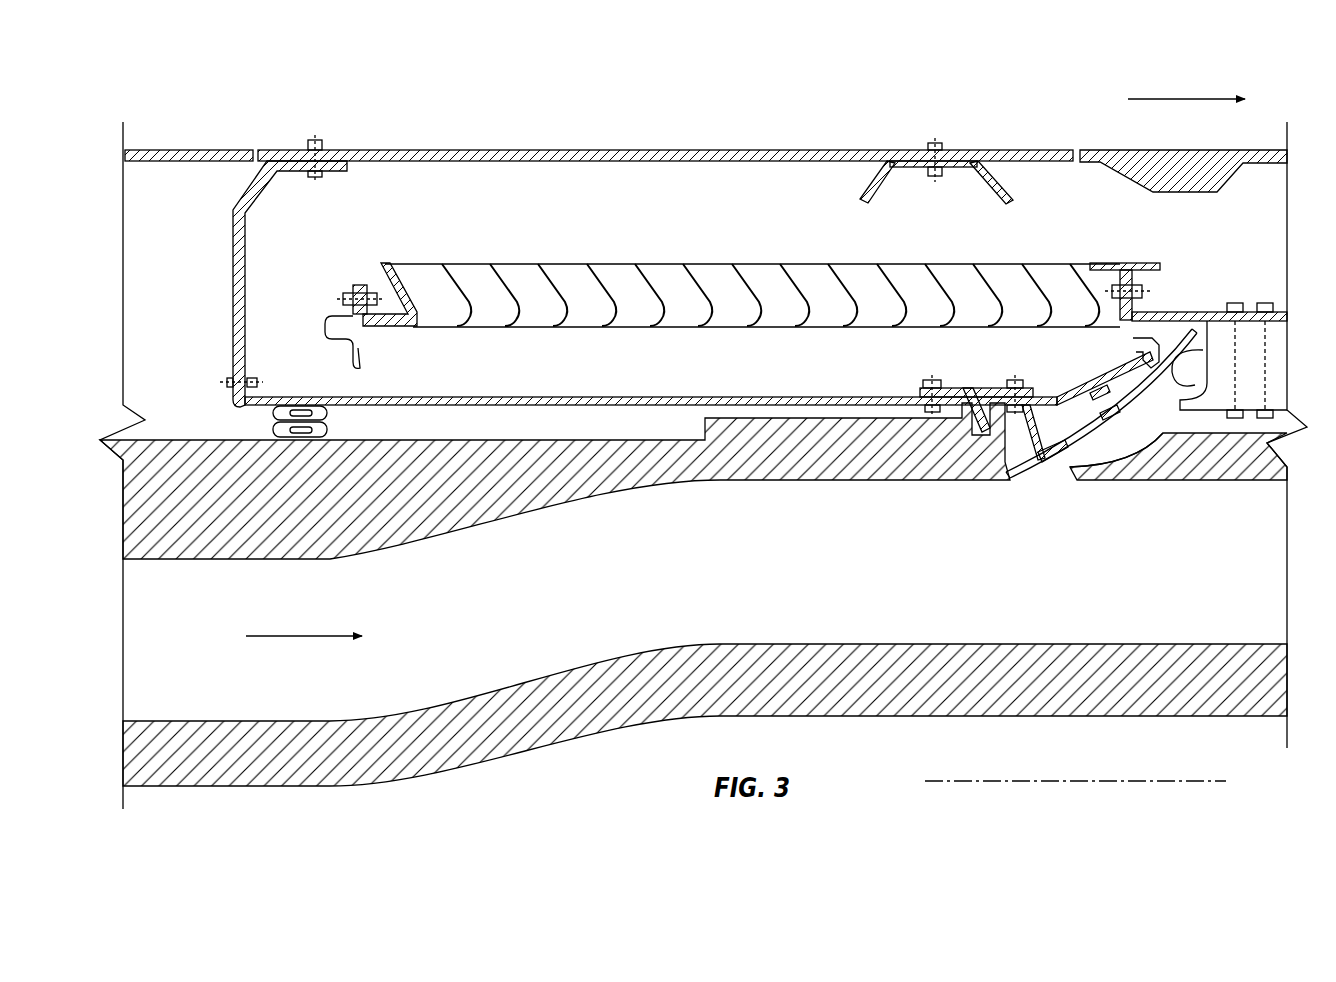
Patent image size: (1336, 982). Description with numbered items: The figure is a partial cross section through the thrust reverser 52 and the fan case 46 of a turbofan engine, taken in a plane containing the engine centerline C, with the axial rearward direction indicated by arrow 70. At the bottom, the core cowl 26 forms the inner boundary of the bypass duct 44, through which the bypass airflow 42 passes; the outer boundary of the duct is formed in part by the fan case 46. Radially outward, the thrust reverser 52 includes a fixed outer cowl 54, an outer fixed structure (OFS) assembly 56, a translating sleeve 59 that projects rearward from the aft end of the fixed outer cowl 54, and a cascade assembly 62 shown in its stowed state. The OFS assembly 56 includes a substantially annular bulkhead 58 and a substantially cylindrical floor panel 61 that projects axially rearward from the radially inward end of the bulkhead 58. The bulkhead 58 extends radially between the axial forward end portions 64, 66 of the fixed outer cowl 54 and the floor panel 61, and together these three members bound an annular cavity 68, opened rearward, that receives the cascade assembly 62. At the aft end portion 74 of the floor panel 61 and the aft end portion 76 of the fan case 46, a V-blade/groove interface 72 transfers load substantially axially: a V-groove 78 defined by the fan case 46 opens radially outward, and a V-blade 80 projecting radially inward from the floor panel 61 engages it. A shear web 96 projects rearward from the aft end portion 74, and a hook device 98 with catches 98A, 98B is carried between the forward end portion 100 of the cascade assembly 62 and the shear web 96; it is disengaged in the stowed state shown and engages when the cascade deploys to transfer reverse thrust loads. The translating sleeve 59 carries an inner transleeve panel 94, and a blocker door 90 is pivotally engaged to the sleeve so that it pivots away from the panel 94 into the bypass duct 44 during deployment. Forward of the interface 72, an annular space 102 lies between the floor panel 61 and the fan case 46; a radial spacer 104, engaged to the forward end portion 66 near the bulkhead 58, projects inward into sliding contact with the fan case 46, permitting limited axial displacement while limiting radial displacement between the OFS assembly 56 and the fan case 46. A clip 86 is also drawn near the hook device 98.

The core cowl 26 is at (895, 647).
The bypass airflow 42 is at (290, 636).
The bypass flowpath or duct 44 is at (618, 591).
The fan case 46 is at (440, 544).
The thrust reverser 52 is at (870, 90).
The fixed outer cowl 54 is at (480, 146).
The outer fixed structure (OFS) assembly 56 is at (230, 312).
The bulkhead 58 is at (247, 247).
The translating sleeve 59 is at (1120, 150).
The floor panel 61 is at (688, 394).
The cascade assembly 62 is at (615, 263).
The axial forward end portion of the fixed outer cowl 64 is at (288, 147).
The axial forward end portion of the floor panel 66 is at (250, 408).
The cavity 68 is at (452, 224).
The axial rearward direction 70 is at (1180, 98).
The V-blade/groove interface 72 is at (958, 394).
The aft end portion of the floor panel 74 is at (868, 470).
The aft end portion of the fan case 76 is at (1001, 482).
The V-groove 78 is at (960, 472).
The V-blade 80 is at (982, 392).
The clip 86 is at (1150, 362).
The blocker door 90 is at (1240, 483).
The inner transleeve panel 94 is at (1195, 412).
The shear web 96 is at (1083, 392).
The hook device 98 is at (368, 355).
The catch of the hook device 98A is at (330, 333).
The catch of the hook device 98B is at (1160, 353).
The forward end portion of the cascade assembly 100 is at (381, 262).
The space 102 is at (463, 434).
The radial spacer 104 is at (352, 427).
The engine centerline C is at (1075, 782).